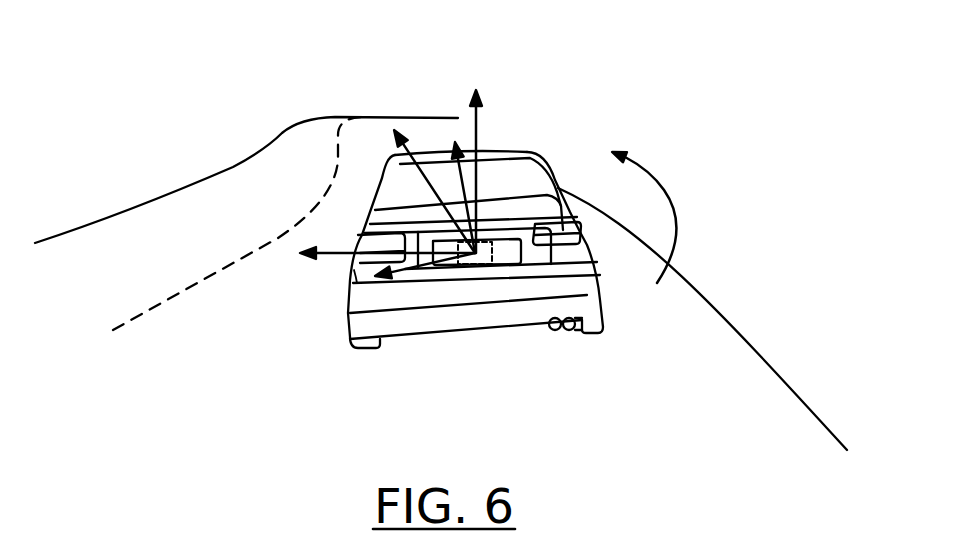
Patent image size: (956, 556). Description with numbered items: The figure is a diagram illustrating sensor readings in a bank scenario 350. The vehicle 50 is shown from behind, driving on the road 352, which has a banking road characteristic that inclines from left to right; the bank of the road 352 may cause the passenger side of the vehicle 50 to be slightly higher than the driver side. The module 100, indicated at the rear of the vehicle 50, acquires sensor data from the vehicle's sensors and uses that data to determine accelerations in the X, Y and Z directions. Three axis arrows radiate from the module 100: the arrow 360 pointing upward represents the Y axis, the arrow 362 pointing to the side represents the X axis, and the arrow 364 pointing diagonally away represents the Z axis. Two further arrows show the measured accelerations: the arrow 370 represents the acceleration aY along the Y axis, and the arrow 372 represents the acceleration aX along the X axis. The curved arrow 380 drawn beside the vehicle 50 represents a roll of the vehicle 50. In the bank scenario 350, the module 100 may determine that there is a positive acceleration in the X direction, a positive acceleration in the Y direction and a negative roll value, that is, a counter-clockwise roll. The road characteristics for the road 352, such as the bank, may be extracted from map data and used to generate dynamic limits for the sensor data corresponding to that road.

The vehicle 50 is at (601, 310).
The module 100 is at (470, 265).
The bank scenario 350 is at (197, 40).
The road 352 is at (166, 200).
The arrow 360 is at (479, 132).
The arrow 362 is at (330, 257).
The arrow 364 is at (408, 150).
The arrow 370 is at (447, 148).
The arrow 372 is at (388, 276).
The curved arrow 380 is at (668, 197).